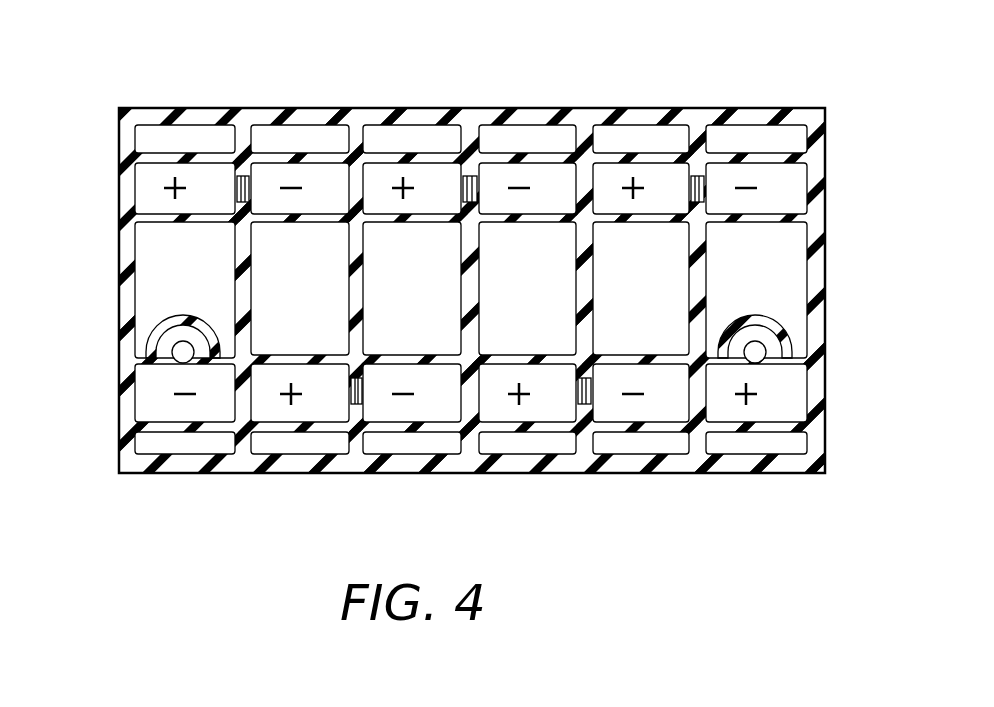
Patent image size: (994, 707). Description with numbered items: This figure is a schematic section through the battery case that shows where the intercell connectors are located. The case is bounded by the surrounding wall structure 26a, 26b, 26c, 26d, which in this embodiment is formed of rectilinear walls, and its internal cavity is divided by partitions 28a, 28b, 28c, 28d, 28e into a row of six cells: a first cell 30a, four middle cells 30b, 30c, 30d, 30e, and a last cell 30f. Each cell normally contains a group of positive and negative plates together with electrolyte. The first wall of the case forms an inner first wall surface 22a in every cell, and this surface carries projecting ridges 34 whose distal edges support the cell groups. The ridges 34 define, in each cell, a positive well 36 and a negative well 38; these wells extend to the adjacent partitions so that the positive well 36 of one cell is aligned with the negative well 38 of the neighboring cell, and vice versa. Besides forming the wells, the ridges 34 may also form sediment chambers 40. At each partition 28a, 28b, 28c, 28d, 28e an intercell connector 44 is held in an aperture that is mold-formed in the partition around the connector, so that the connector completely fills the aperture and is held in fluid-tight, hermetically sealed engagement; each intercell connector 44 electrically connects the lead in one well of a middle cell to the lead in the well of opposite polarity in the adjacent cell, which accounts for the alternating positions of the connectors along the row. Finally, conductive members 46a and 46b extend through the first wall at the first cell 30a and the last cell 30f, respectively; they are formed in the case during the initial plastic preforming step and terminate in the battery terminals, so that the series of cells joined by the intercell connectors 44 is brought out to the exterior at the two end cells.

The inner first wall surface 22a is at (793, 263).
The surrounding wall structure 26a is at (655, 468).
The surrounding wall structure 26b is at (625, 112).
The surrounding wall structure 26c is at (122, 280).
The surrounding wall structure 26d is at (824, 290).
The partition 28a is at (250, 295).
The partition 28b is at (362, 295).
The partition 28c is at (478, 295).
The partition 28d is at (592, 295).
The partition 28e is at (705, 295).
The first cell 30a is at (185, 290).
The middle cell 30b is at (300, 288).
The middle cell 30c is at (412, 288).
The middle cell 30d is at (527, 288).
The middle cell 30e is at (641, 288).
The last cell 30f is at (756, 290).
The ridges 34 is at (190, 157).
The positive wells 36 is at (145, 178).
The negative wells 38 is at (185, 405).
The sediment chambers 40 is at (565, 237).
The intercell connector 44 is at (250, 190).
The conductive member 46a is at (176, 350).
The conductive member 46b is at (757, 350).